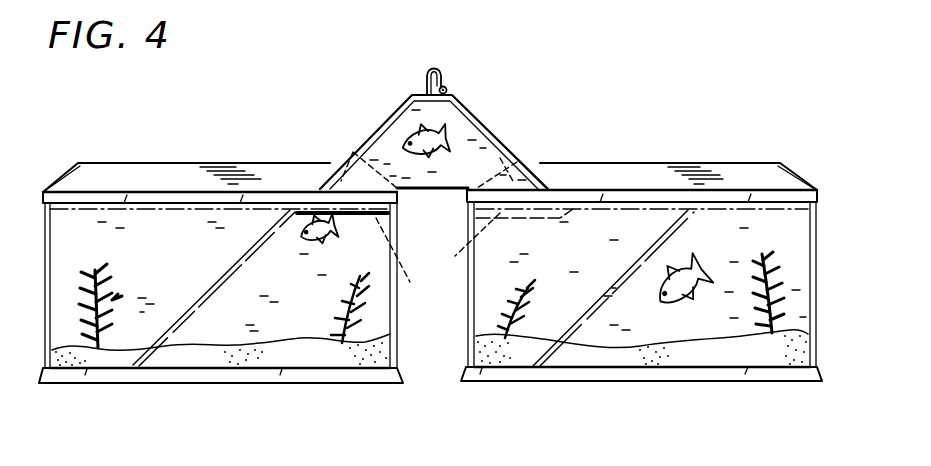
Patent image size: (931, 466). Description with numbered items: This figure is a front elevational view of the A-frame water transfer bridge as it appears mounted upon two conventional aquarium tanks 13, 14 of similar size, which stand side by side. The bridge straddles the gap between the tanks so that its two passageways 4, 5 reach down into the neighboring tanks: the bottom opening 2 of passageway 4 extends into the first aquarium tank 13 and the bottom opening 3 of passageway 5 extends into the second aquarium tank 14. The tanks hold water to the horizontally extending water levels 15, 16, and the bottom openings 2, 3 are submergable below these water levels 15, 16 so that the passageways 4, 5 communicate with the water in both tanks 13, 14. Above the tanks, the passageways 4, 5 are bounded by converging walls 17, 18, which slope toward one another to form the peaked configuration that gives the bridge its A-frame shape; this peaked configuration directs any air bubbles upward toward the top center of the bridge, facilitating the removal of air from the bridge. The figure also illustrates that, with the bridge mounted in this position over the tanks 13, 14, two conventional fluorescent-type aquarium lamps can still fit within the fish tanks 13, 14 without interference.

The bottom opening 2 is at (397, 267).
The bottom opening 3 is at (462, 256).
The passageway 4 is at (353, 152).
The passageway 5 is at (517, 162).
The aquarium tank 13 is at (200, 376).
The aquarium tank 14 is at (684, 372).
The water level 15 is at (180, 208).
The water level 16 is at (764, 207).
The converging wall 17 is at (390, 112).
The converging wall 18 is at (482, 122).